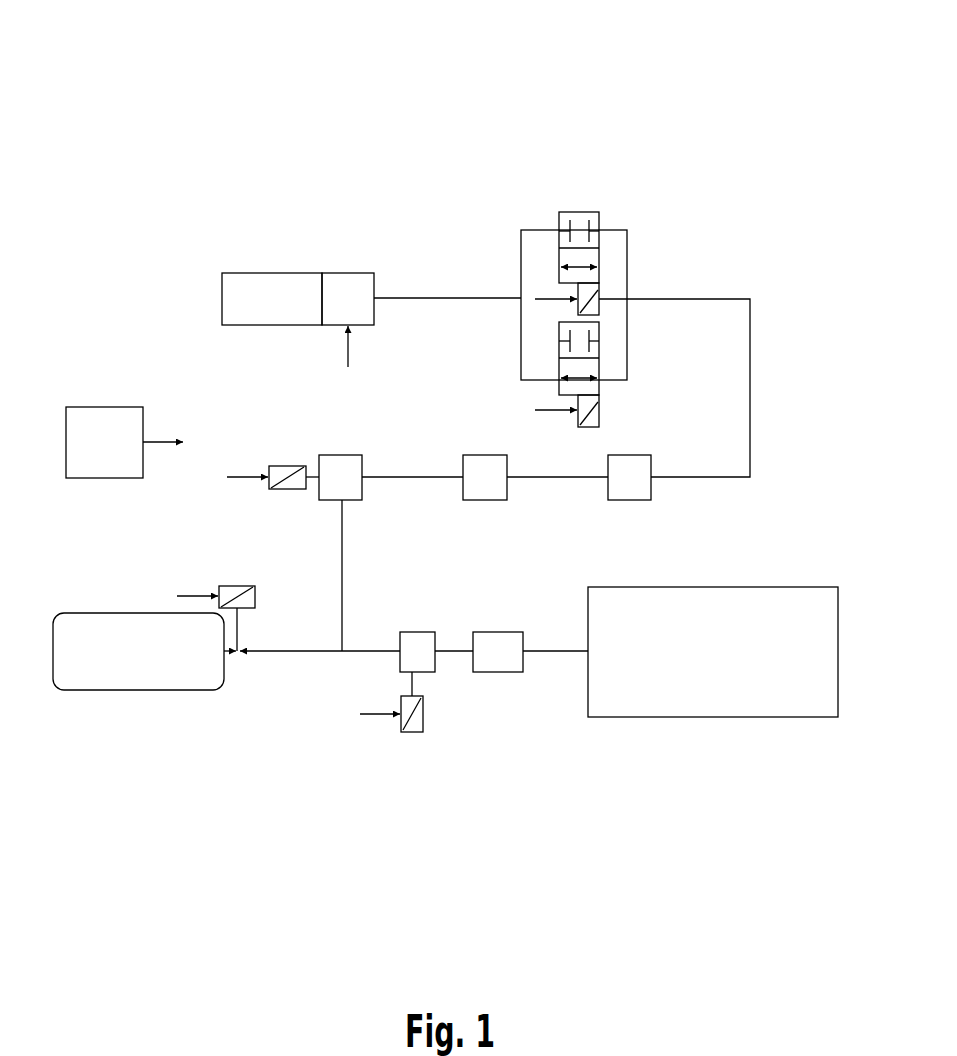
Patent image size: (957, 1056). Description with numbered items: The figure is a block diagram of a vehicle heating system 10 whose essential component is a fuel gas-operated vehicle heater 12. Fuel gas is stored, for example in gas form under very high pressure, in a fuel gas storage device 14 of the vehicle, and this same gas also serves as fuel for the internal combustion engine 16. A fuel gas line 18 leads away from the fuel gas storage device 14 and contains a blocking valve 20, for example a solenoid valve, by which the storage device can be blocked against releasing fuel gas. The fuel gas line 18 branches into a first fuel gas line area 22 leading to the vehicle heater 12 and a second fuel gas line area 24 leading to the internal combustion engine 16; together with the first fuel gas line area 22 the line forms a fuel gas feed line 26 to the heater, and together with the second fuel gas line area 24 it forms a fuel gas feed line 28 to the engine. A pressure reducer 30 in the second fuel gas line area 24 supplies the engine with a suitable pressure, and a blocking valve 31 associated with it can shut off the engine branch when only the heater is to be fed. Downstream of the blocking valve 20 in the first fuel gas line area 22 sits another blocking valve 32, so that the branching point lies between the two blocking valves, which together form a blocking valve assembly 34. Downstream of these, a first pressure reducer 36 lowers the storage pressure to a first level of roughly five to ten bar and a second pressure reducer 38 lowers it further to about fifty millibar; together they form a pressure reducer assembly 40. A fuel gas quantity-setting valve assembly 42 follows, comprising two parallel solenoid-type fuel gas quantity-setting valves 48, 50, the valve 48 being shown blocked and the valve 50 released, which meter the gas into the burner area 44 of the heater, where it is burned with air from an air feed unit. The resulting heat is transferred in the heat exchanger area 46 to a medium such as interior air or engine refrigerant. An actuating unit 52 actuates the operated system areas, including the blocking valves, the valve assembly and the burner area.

The vehicle heating system 10 is at (722, 100).
The vehicle heater 12 is at (291, 190).
The fuel gas storage device 14 is at (98, 690).
The internal combustion engine 16 is at (765, 717).
The fuel gas line 18 is at (317, 653).
The blocking valve 20 is at (232, 655).
The first fuel gas line area 22 is at (773, 367).
The second fuel gas line area 24 is at (541, 716).
The fuel gas feed line 26 is at (256, 527).
The fuel gas feed line 28 is at (383, 773).
The pressure reducer 30 is at (500, 632).
The blocking valve 31 is at (436, 672).
The blocking valve 32 is at (338, 455).
The blocking valve assembly 34 is at (403, 555).
The first pressure reducer 36 is at (482, 455).
The second pressure reducer 38 is at (647, 455).
The pressure reducer assembly 40 is at (646, 510).
The fuel gas quantity-setting valve assembly 42 is at (557, 190).
The burner area 44 is at (357, 273).
The heat exchanger area 46 is at (232, 273).
The fuel gas quantity-setting valve 48 is at (601, 225).
The fuel gas quantity-setting valve 50 is at (600, 352).
The actuating unit 52 is at (100, 407).